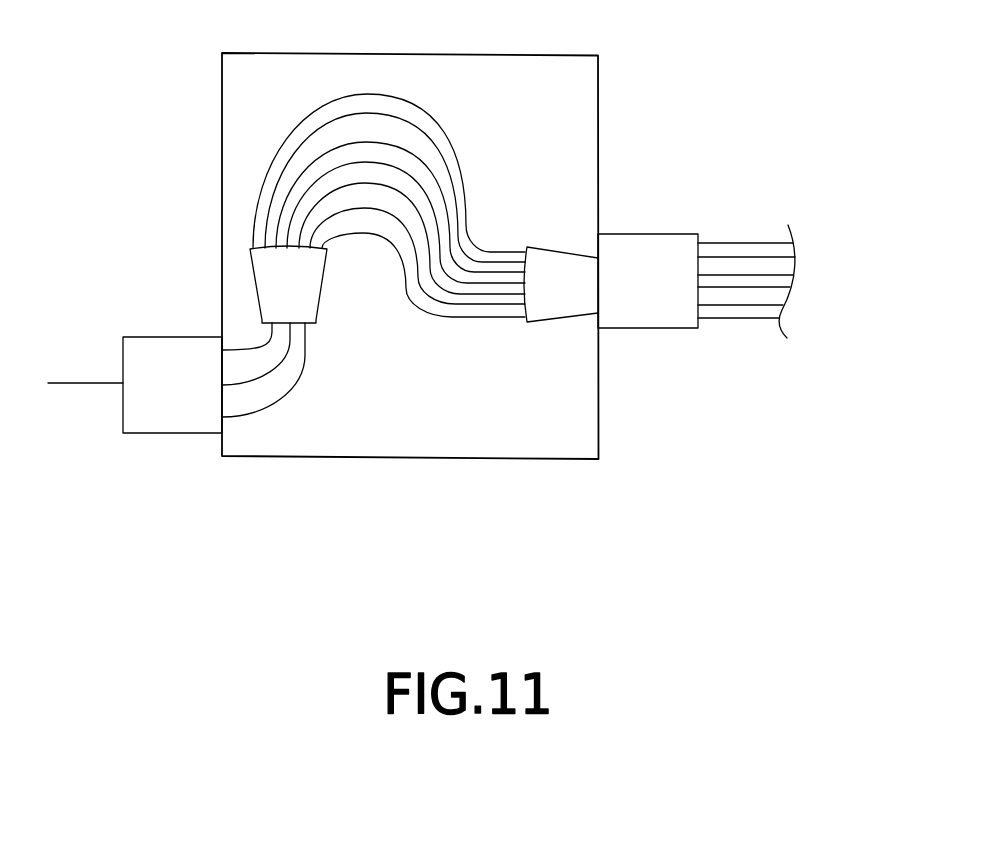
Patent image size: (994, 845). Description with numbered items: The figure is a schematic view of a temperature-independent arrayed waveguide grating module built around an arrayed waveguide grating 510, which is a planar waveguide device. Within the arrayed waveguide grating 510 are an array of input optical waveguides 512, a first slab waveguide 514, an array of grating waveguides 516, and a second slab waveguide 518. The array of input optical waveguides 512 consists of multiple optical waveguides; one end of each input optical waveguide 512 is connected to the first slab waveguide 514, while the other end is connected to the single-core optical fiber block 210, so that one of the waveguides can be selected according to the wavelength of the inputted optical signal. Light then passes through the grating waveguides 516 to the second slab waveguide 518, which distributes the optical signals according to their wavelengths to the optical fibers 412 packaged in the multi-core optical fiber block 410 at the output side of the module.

The arrayed waveguide grating 510 is at (616, 118).
The array of input optical waveguides 512 is at (315, 386).
The first slab waveguide 514 is at (250, 253).
The array of grating waveguides 516 is at (311, 98).
The second slab waveguide 518 is at (565, 250).
The multi-core optical fiber block 410 is at (677, 220).
The optical fibers 412 is at (754, 232).
The single-core optical fiber block 210 is at (121, 439).